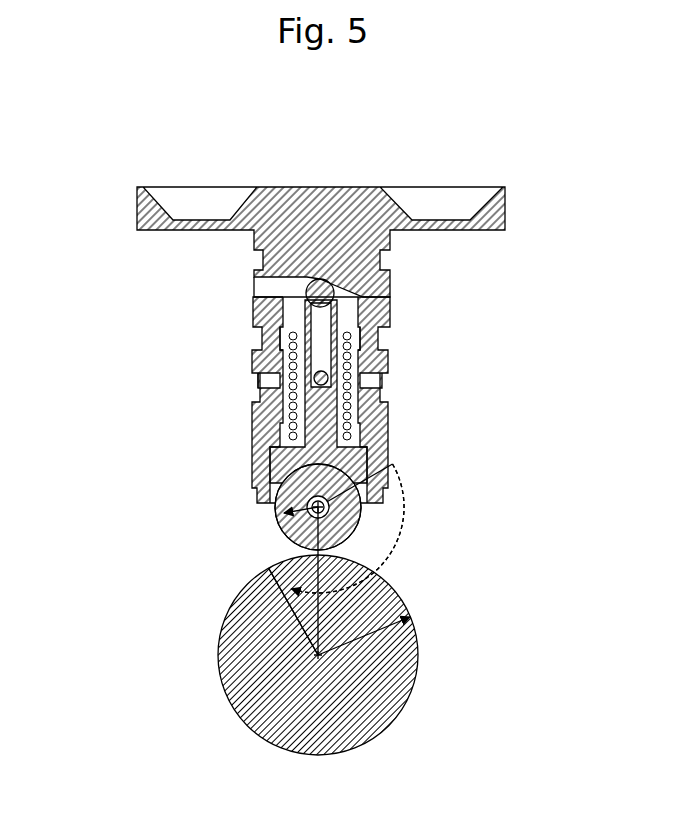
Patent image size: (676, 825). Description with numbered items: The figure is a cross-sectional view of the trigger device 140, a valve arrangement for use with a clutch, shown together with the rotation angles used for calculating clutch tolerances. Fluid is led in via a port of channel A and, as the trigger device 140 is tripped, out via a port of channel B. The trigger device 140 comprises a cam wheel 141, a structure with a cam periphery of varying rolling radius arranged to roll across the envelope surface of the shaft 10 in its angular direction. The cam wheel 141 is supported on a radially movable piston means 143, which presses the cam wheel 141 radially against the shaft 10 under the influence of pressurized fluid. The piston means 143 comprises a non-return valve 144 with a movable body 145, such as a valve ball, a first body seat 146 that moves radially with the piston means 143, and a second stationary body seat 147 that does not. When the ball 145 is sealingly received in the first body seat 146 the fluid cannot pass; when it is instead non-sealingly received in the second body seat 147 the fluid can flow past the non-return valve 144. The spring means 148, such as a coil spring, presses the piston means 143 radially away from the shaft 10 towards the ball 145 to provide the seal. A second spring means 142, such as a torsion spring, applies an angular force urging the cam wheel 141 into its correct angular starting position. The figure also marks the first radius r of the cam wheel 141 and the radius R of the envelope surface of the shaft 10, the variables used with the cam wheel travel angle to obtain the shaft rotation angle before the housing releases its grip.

The trigger device 140 is at (308, 343).
The non-return valve 144 is at (406, 298).
The piston means 143 is at (332, 415).
The second stationary body seat 147 is at (345, 314).
The movable body 145 is at (302, 295).
The first body seat 146 is at (296, 312).
The spring means 148 is at (340, 401).
The second spring means 142 is at (322, 510).
The cam wheel 141 is at (288, 531).
The shaft 10 is at (381, 732).
The channel A is at (283, 288).
The channel B is at (280, 380).
The first radius of the cam wheel r is at (300, 534).
The radius of the shaft envelope surface R is at (418, 658).